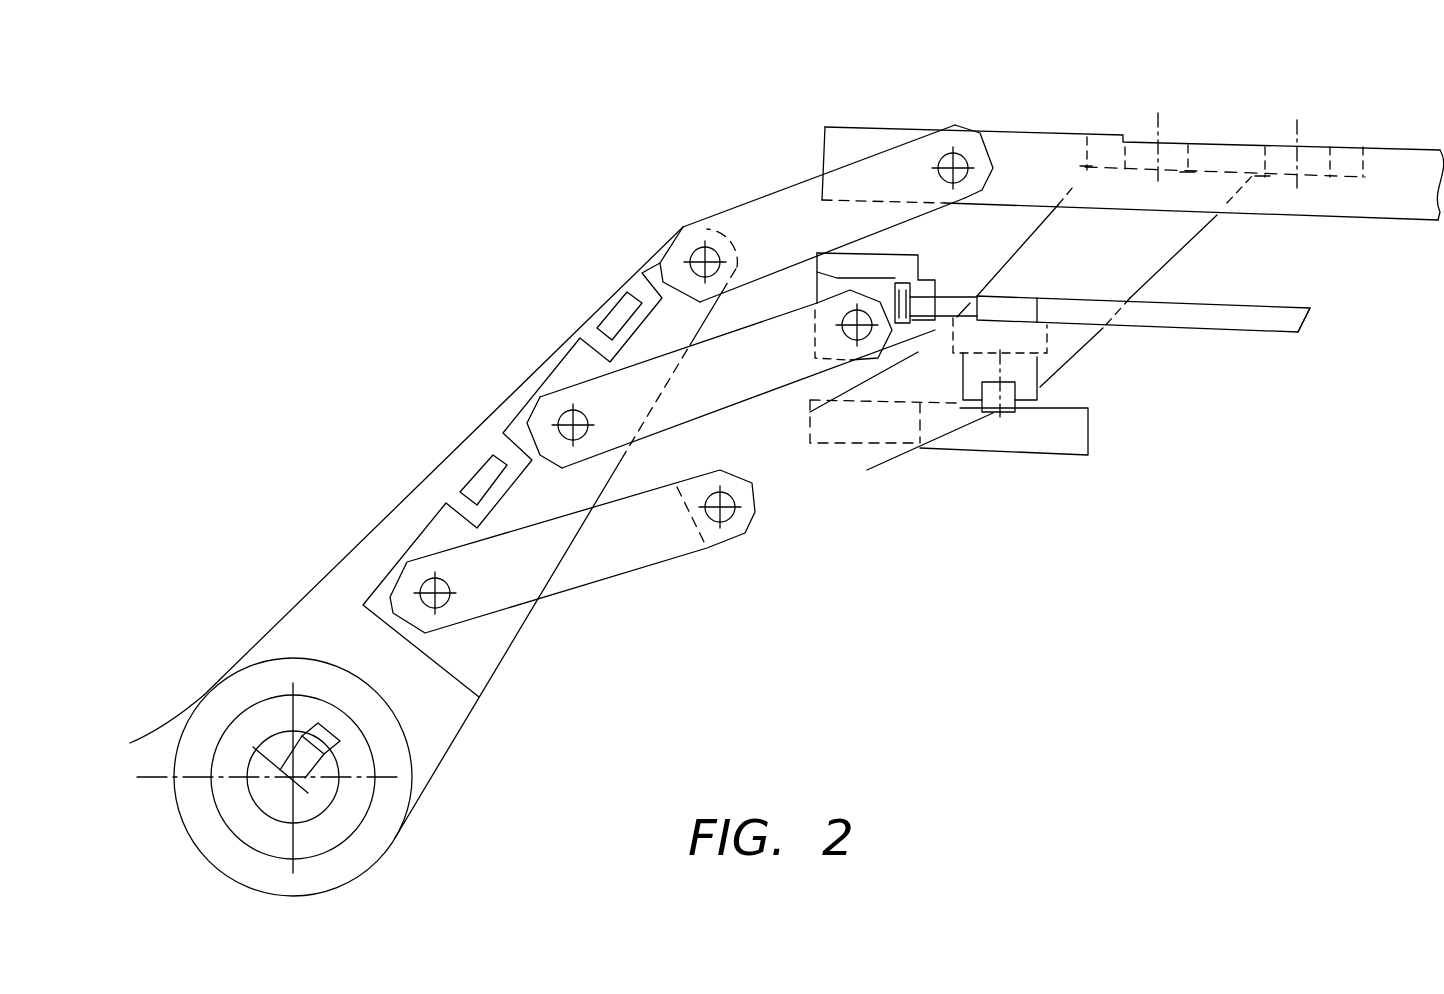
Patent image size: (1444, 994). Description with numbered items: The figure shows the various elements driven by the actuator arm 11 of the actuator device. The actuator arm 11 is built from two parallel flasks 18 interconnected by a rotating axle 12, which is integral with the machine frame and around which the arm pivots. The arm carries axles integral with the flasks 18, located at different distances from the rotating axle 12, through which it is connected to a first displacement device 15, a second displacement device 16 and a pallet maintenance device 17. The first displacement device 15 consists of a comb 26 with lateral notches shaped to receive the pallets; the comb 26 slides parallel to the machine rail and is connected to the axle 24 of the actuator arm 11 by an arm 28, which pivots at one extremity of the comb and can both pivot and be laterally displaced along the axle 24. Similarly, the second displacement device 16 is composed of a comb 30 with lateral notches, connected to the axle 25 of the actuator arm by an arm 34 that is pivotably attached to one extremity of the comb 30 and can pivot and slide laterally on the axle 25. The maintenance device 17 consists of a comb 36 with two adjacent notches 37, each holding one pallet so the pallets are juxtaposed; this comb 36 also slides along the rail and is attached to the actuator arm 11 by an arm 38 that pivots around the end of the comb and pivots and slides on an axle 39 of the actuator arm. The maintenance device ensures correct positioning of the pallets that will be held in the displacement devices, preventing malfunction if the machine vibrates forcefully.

The actuator arm 11 is at (458, 745).
The rotating axle 12 is at (300, 780).
The first displacement device 15 is at (852, 125).
The second displacement device 16 is at (1180, 332).
The pallet maintenance device 17 is at (1143, 292).
The flasks 18 is at (267, 657).
The axle 24 is at (693, 247).
The axle 25 is at (558, 424).
The comb 26 is at (1010, 167).
The arm 28 is at (757, 212).
The comb 30 is at (1262, 322).
The arm 34 is at (603, 393).
The comb 36 is at (1197, 195).
The adjacent notches 37 is at (1177, 150).
The arm 38 is at (662, 545).
The axle 39 is at (445, 602).